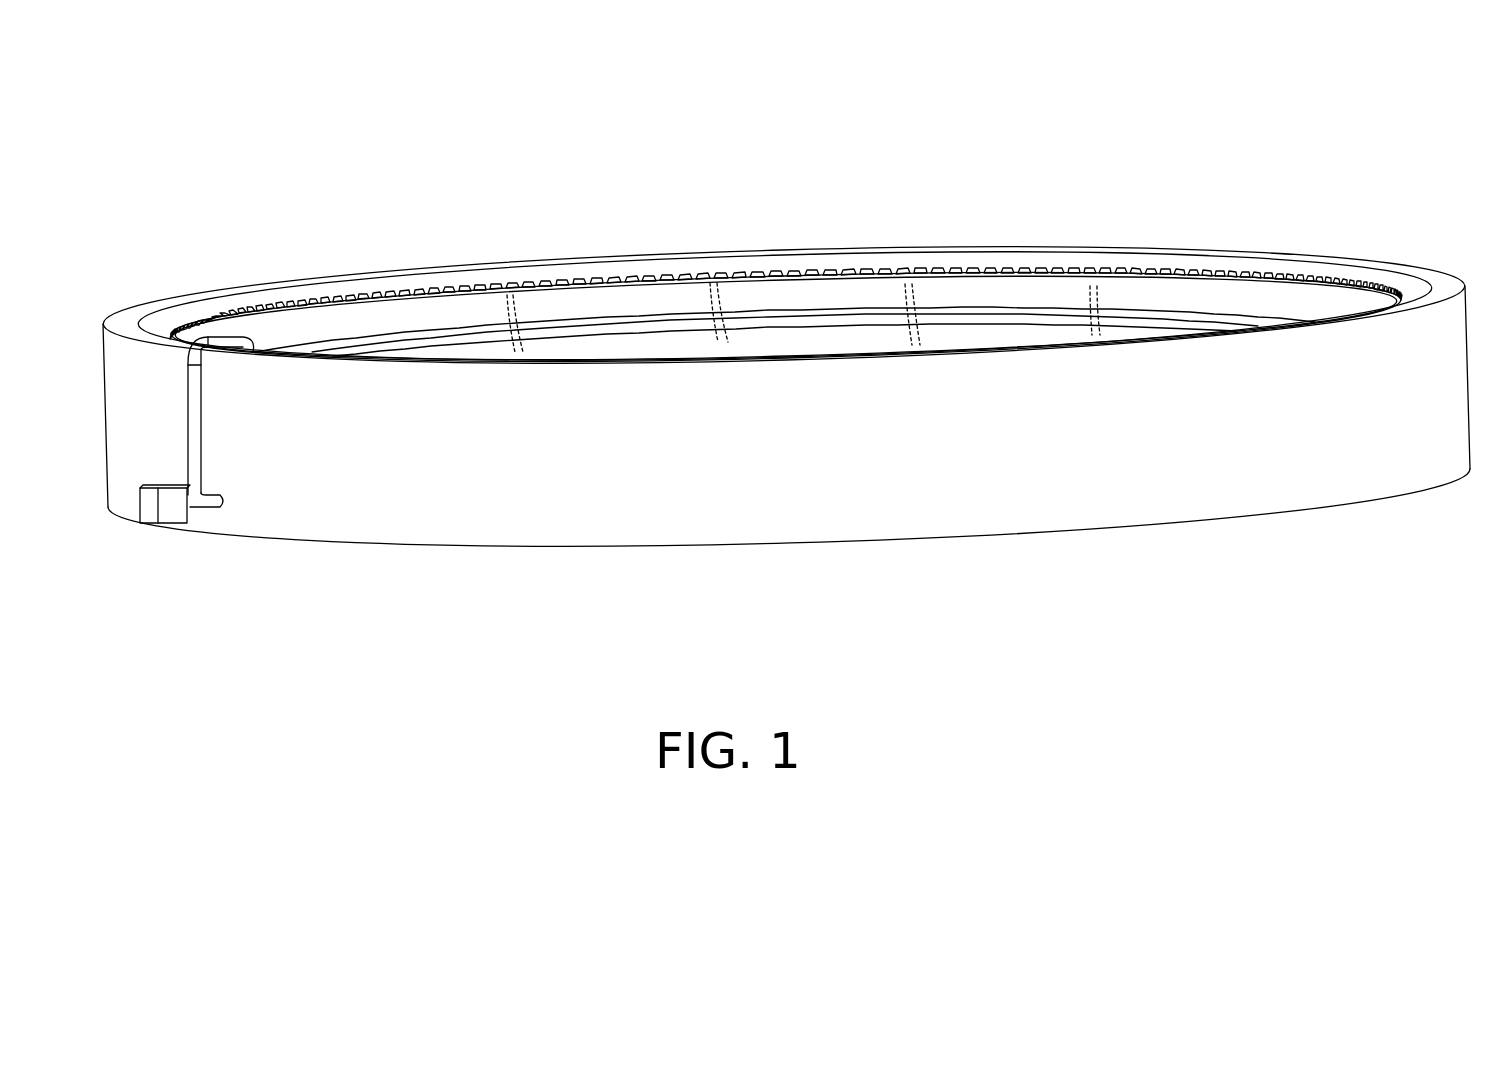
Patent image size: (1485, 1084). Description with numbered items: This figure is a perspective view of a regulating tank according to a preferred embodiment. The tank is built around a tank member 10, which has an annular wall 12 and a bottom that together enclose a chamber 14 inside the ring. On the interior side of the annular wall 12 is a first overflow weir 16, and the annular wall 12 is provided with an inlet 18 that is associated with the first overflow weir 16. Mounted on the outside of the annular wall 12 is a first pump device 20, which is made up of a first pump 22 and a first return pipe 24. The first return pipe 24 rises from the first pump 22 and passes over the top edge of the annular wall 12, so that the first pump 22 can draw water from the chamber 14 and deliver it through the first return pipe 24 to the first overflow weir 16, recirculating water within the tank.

The tank member 10 is at (1441, 226).
The annular wall 12 is at (1398, 468).
The chamber 14 is at (808, 342).
The first overflow weir 16 is at (534, 280).
The inlet 18 is at (398, 290).
The first pump device 20 is at (141, 462).
The first pump 22 is at (170, 508).
The first return pipe 24 is at (194, 410).